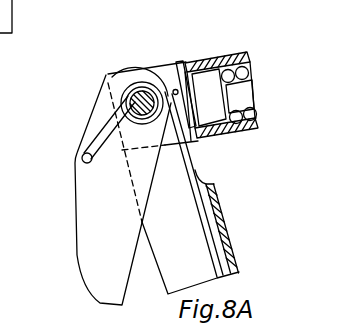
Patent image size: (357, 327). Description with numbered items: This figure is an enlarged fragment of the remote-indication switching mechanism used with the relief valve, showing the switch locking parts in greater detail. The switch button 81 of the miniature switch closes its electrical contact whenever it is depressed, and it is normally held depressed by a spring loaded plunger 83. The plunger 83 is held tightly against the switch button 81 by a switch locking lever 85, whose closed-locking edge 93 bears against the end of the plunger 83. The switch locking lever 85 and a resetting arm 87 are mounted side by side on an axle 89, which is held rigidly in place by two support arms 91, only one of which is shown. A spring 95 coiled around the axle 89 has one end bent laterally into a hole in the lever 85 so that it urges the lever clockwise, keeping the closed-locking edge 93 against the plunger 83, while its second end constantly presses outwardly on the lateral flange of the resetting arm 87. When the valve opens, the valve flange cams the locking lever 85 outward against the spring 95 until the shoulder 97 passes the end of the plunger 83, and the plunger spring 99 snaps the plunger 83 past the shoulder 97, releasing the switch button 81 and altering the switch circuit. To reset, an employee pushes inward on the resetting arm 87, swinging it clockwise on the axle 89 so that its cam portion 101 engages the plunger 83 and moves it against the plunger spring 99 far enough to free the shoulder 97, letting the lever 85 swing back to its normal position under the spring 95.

The switch button 81 is at (195, 141).
The spring loaded plunger 83 is at (233, 90).
The switch locking lever 85 is at (123, 190).
The resetting arm 87 is at (173, 188).
The axle 89 is at (140, 95).
The support arms 91 is at (110, 74).
The closed-locking edge 93 is at (189, 68).
The spring 95 is at (96, 138).
The shoulder 97 is at (176, 89).
The plunger spring 99 is at (243, 67).
The cam portion 101 is at (167, 67).